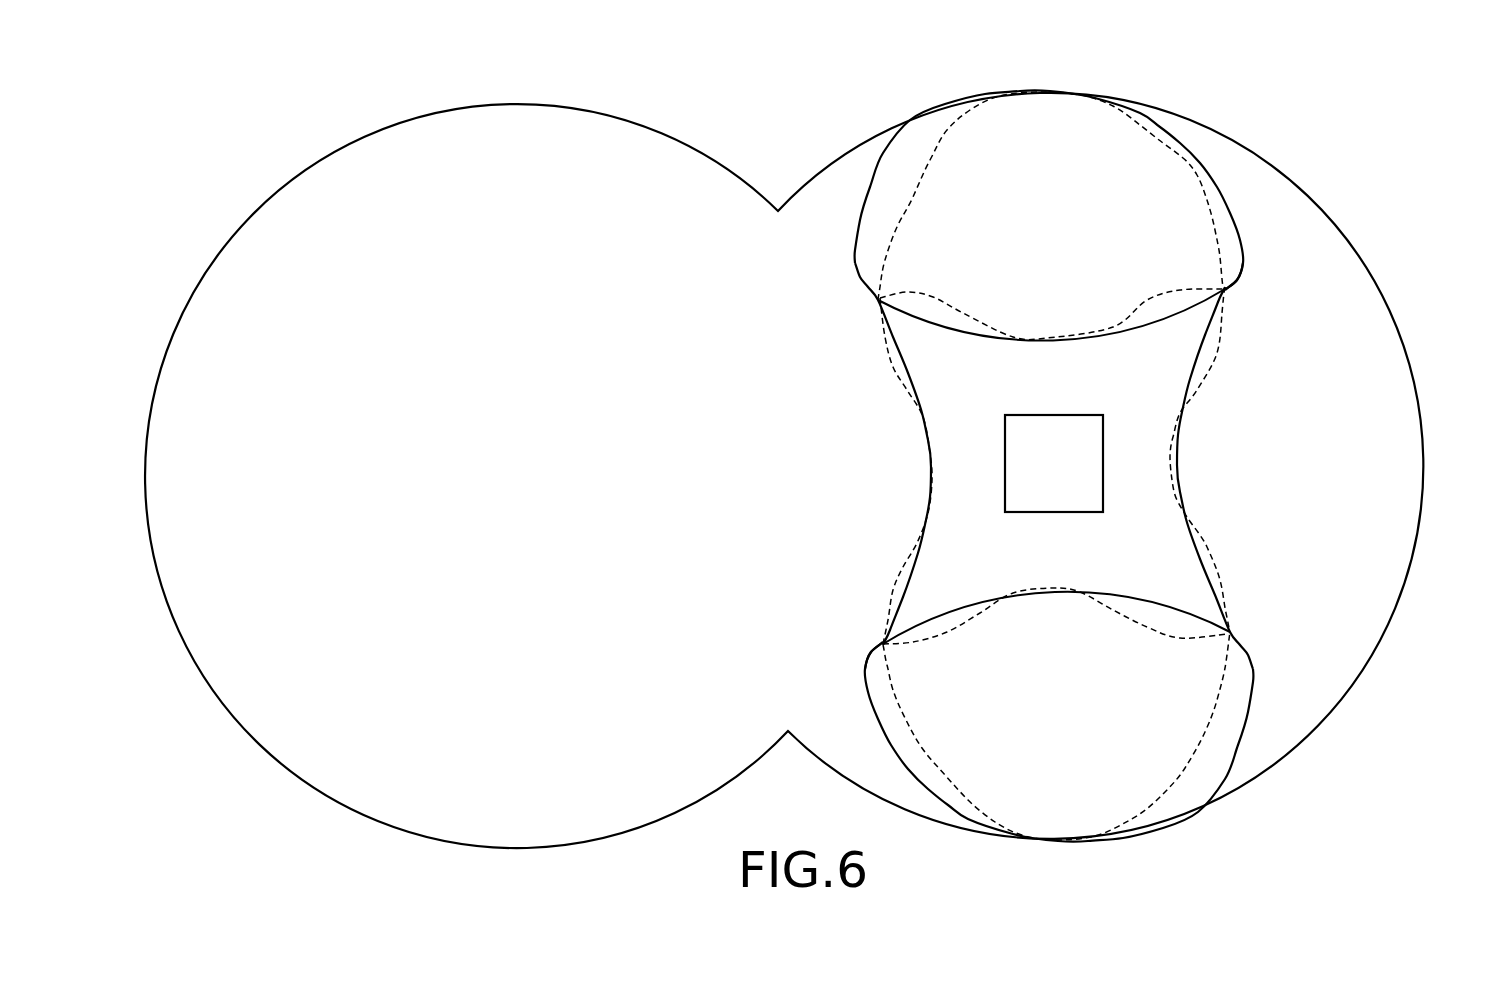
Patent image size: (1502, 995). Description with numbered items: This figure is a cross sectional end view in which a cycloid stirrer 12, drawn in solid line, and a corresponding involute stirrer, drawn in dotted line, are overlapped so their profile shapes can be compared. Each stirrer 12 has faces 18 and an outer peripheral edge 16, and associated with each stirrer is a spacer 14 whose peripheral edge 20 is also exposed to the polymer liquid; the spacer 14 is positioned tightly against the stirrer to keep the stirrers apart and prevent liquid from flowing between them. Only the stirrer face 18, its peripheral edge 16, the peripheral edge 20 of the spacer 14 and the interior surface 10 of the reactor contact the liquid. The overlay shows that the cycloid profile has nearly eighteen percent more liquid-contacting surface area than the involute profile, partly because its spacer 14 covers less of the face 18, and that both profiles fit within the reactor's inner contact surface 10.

The interior surface 10 is at (1407, 358).
The stirrer 12 is at (978, 106).
The spacer 14 is at (1071, 566).
The outer peripheral edge 16 is at (855, 263).
The stirrer face 18 is at (895, 190).
The peripheral edge of spacer 20 is at (992, 334).